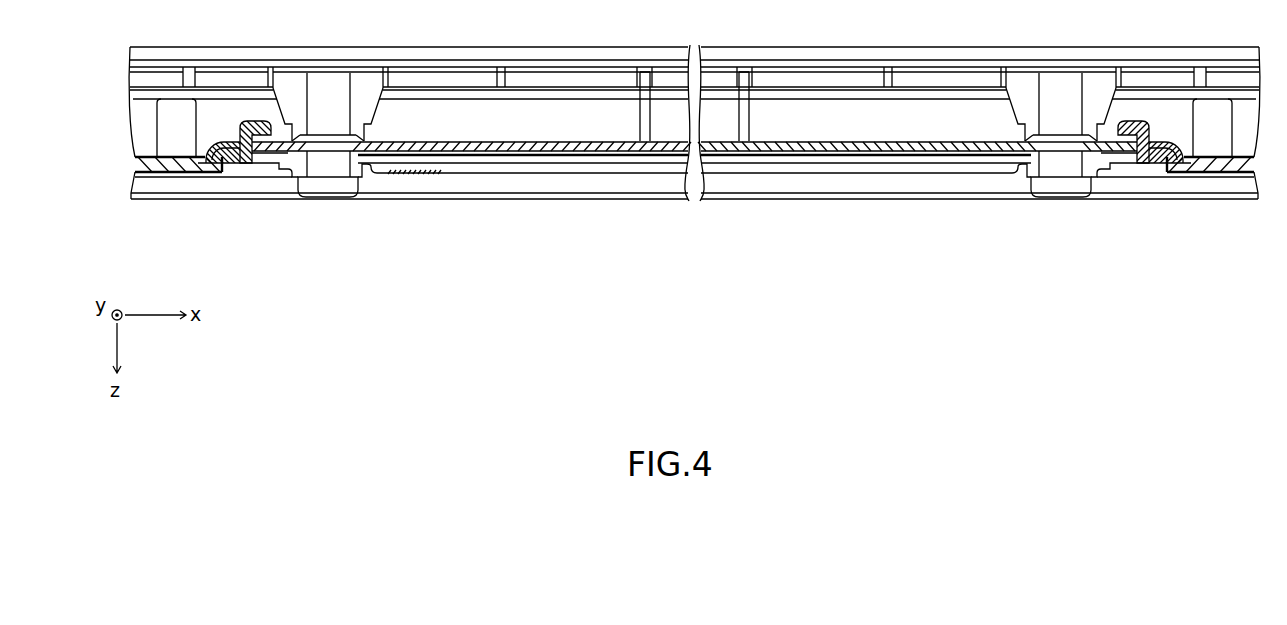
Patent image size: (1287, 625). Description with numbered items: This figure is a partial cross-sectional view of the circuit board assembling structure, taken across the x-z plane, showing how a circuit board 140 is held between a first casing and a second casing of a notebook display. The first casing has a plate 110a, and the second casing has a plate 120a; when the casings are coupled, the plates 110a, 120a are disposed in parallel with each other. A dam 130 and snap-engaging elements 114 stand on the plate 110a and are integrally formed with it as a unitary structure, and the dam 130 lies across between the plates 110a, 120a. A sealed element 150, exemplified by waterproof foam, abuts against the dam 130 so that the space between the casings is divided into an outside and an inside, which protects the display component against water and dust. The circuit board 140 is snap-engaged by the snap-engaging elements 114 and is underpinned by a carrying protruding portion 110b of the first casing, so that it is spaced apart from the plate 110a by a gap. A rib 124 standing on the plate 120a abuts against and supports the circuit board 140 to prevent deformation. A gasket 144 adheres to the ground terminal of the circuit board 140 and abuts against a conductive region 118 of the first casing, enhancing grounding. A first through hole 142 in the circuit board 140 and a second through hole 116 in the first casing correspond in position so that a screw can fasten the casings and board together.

The plate 110a is at (403, 176).
The carrying protruding portion 110b is at (266, 158).
The snap-engaging element 114 is at (240, 165).
The second through hole 116 is at (307, 165).
The conductive region 118 is at (577, 165).
The plate 120a is at (143, 51).
The rib 124 is at (644, 127).
The dam 130 is at (148, 135).
The circuit board 140 is at (470, 152).
The first through hole 142 is at (300, 152).
The gasket 144 is at (530, 157).
The sealed element 150 is at (150, 93).